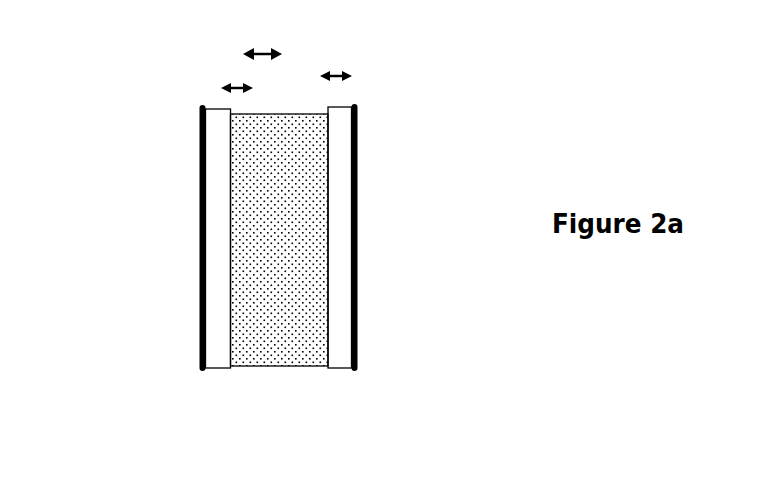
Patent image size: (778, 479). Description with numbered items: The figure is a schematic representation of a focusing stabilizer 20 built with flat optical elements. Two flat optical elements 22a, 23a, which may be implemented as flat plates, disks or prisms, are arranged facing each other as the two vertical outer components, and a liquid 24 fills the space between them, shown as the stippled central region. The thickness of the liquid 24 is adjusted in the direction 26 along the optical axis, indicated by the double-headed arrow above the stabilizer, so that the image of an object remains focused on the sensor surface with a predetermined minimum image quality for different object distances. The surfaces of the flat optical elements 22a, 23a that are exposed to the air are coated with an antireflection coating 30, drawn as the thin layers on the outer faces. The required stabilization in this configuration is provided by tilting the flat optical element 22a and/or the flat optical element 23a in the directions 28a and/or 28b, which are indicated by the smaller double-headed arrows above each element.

The focusing stabilizer 20 is at (128, 147).
The flat optical element 22a is at (216, 370).
The flat optical element 23a is at (340, 370).
The liquid 24 is at (305, 262).
The direction along the optical axis 26 is at (275, 53).
The tilting direction 28a is at (232, 88).
The tilting direction 28b is at (353, 72).
The antireflection coating 30 is at (200, 215).